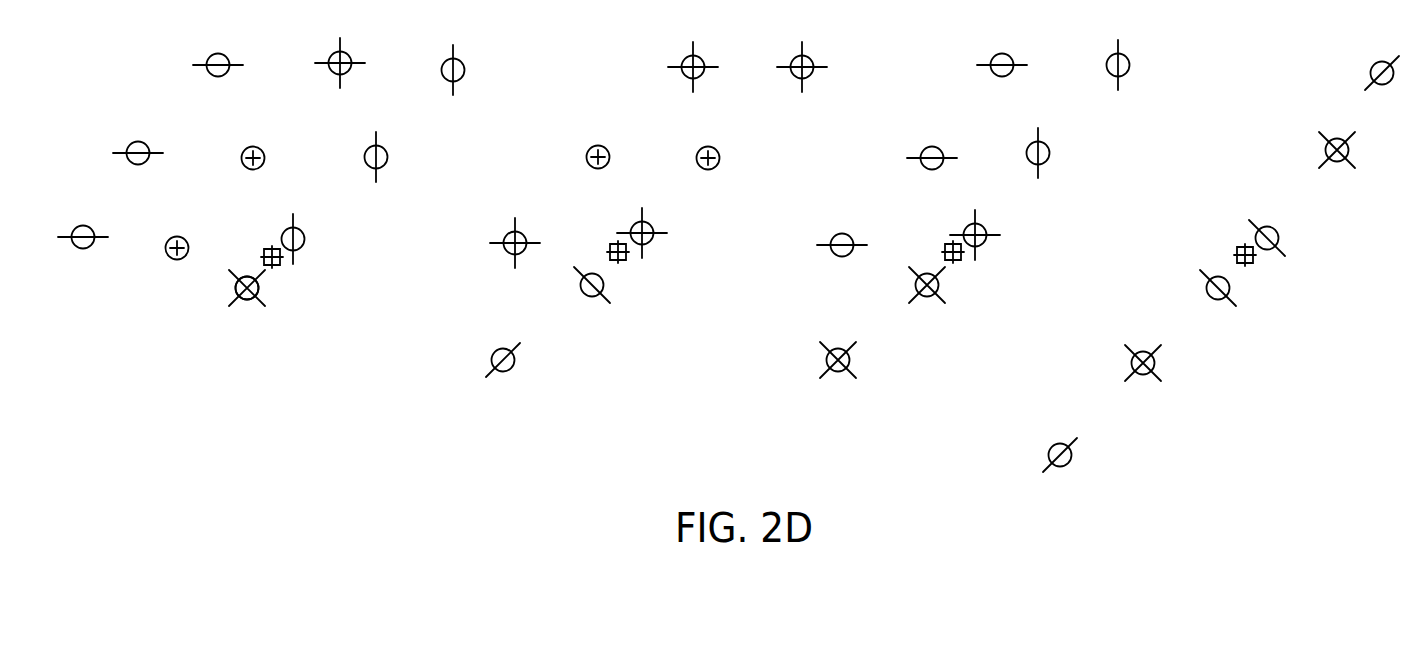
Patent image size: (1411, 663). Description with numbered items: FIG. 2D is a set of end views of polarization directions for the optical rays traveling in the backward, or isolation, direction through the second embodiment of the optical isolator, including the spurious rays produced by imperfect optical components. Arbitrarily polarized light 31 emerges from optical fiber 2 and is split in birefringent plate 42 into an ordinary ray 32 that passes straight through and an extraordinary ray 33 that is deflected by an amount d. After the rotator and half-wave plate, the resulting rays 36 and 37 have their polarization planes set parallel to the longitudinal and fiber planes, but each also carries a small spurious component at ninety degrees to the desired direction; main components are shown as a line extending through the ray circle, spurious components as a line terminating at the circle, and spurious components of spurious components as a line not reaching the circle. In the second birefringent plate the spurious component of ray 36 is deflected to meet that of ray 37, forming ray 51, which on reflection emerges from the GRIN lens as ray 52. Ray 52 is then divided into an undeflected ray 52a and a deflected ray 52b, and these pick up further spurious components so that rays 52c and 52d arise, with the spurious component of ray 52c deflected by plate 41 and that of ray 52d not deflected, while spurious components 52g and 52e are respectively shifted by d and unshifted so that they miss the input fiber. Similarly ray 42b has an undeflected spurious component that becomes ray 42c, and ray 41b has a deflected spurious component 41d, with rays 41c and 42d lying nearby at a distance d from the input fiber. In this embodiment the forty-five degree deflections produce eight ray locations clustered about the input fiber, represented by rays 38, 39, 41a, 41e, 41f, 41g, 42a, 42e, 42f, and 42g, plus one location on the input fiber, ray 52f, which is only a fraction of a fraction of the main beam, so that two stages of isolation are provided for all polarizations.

The single-mode optical fiber 2 is at (237, 287).
The arbitrarily polarized light 31 is at (261, 285).
The ordinary ray 32 is at (604, 281).
The extraordinary ray 33 is at (514, 353).
The ray 36 is at (940, 281).
The ray 37 is at (852, 356).
The blue sub-pixel 38 is at (1230, 284).
The sub-pixel 39 is at (1071, 447).
The ray 51 is at (1156, 359).
The birefringent plate 41 is at (1371, 71).
The first light source a 41a is at (1127, 57).
The ray 41b is at (1011, 57).
The ray 41c is at (811, 58).
The ray 41d is at (702, 58).
The first light source e 41e is at (461, 61).
The first light source f 41f is at (349, 55).
The first light source g 41g is at (227, 57).
The birefringent plate 42 is at (1278, 230).
The second light source a 42a is at (984, 227).
The ray 42b is at (851, 237).
The ray 42c is at (651, 225).
The ray 42d is at (524, 234).
The second light source e 42e is at (302, 231).
The second light source f 42f is at (185, 240).
The second light source g 42g is at (92, 229).
The ray 52 is at (1326, 148).
The ray 52a is at (1047, 145).
The ray 52b is at (941, 150).
The ray 52c is at (717, 150).
The ray 52d is at (607, 149).
The spurious component 52e is at (385, 149).
The ray 52f is at (262, 150).
The spurious component 52g is at (147, 145).